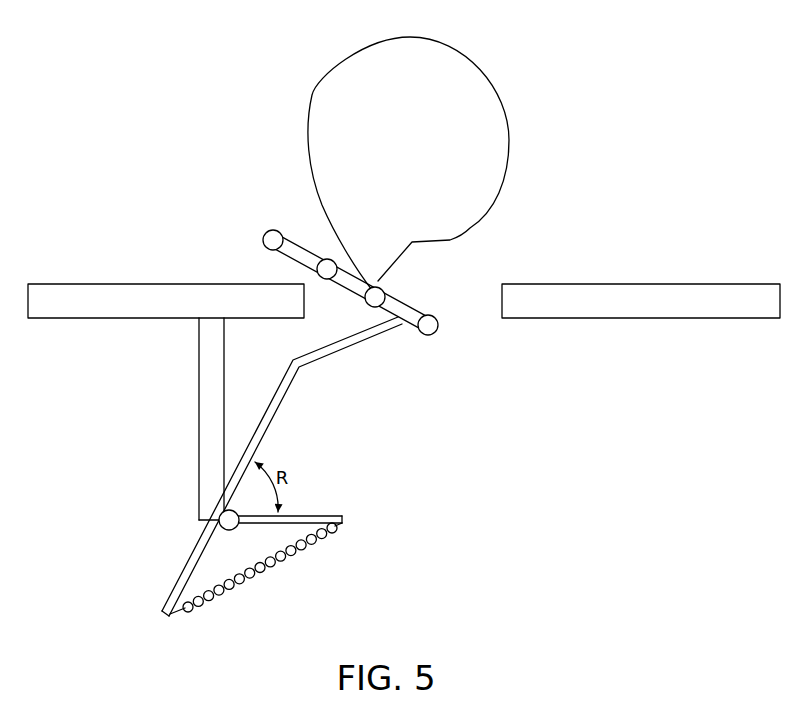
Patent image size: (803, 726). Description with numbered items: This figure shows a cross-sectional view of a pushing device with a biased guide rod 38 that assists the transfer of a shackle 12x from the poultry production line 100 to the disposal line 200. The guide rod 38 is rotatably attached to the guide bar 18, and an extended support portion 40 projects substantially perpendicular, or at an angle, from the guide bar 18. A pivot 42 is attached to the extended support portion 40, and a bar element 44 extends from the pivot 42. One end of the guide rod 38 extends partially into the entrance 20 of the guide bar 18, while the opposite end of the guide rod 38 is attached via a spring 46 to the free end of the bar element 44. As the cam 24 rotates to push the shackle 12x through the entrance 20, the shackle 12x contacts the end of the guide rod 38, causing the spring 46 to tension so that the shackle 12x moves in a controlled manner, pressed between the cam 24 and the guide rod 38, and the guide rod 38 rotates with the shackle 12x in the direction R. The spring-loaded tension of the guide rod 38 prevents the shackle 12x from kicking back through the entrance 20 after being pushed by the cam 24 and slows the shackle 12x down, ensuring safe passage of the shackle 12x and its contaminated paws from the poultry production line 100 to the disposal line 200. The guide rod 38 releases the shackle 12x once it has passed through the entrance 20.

The poultry production line 100 is at (631, 81).
The disposal line 200 is at (644, 425).
The guide bar 18 is at (165, 293).
The entrance 20 is at (471, 311).
The cam 24 is at (493, 123).
The shackle 12x is at (405, 313).
The biased guide rod 38 is at (283, 397).
The extended support portion 40 is at (208, 409).
The pivot 42 is at (221, 522).
The bar element 44 is at (312, 514).
The spring 46 is at (273, 570).